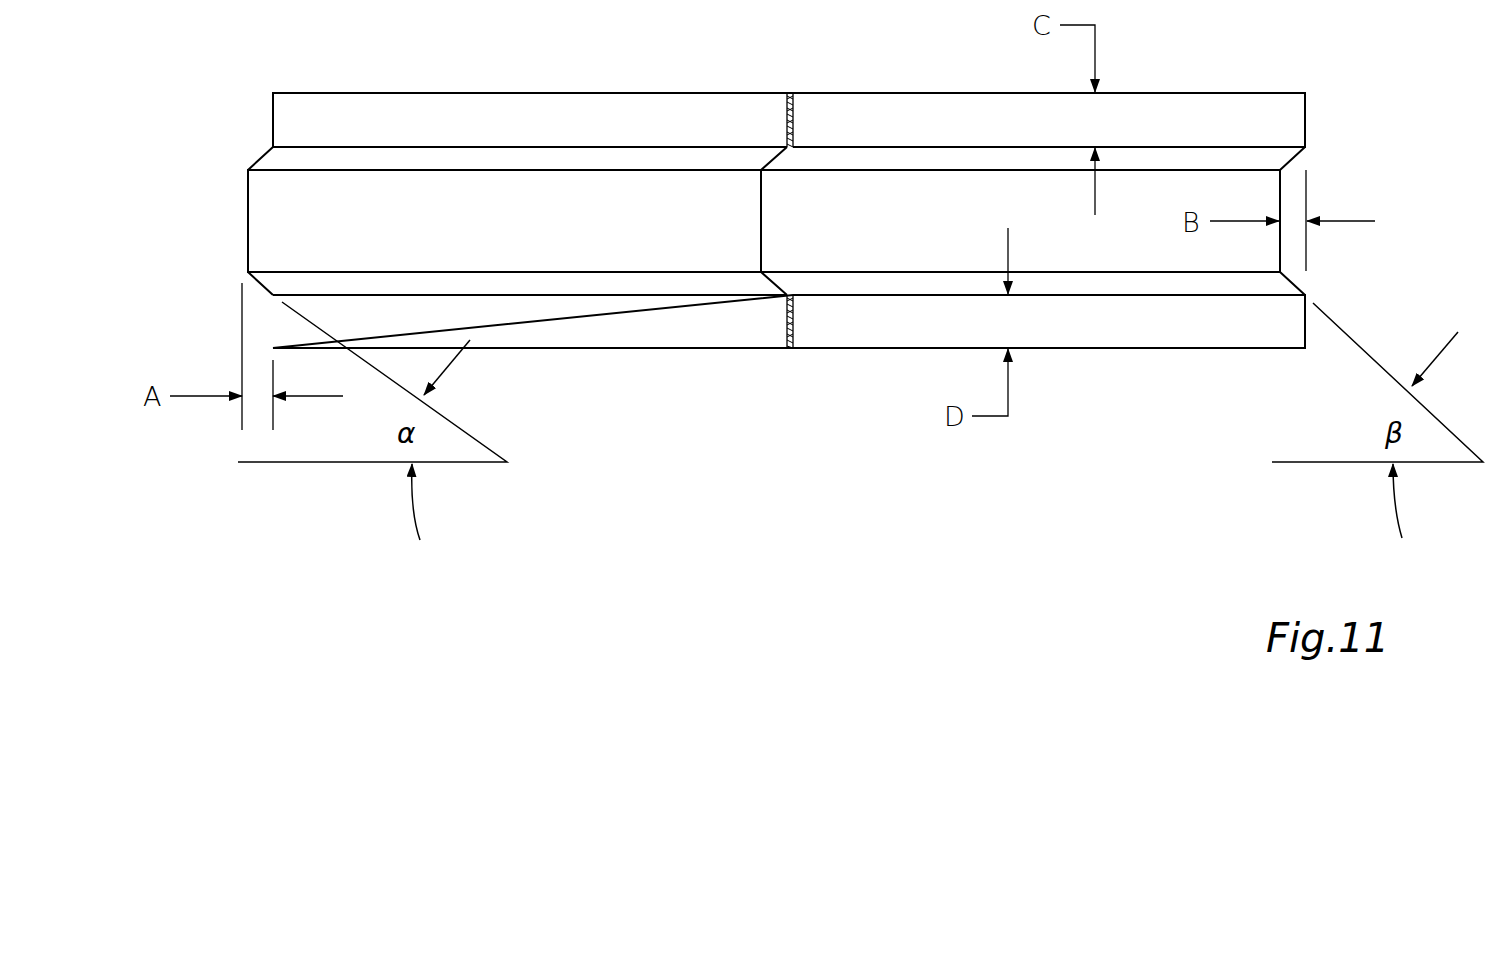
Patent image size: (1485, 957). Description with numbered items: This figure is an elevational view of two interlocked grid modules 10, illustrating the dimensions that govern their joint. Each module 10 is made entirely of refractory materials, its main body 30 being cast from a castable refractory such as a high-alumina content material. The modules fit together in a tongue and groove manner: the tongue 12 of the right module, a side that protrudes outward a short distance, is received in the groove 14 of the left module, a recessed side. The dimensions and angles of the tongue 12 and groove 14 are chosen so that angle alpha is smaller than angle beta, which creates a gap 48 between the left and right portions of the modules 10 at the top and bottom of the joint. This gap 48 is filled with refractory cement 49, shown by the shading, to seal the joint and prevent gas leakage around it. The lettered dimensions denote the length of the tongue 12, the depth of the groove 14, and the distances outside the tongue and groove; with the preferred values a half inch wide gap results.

The grid module 10 is at (466, 93).
The tongue 12 is at (248, 207).
The groove 14 is at (568, 185).
The main body 30 is at (633, 93).
The gap 48 is at (789, 112).
The refractory cement 49 is at (790, 93).